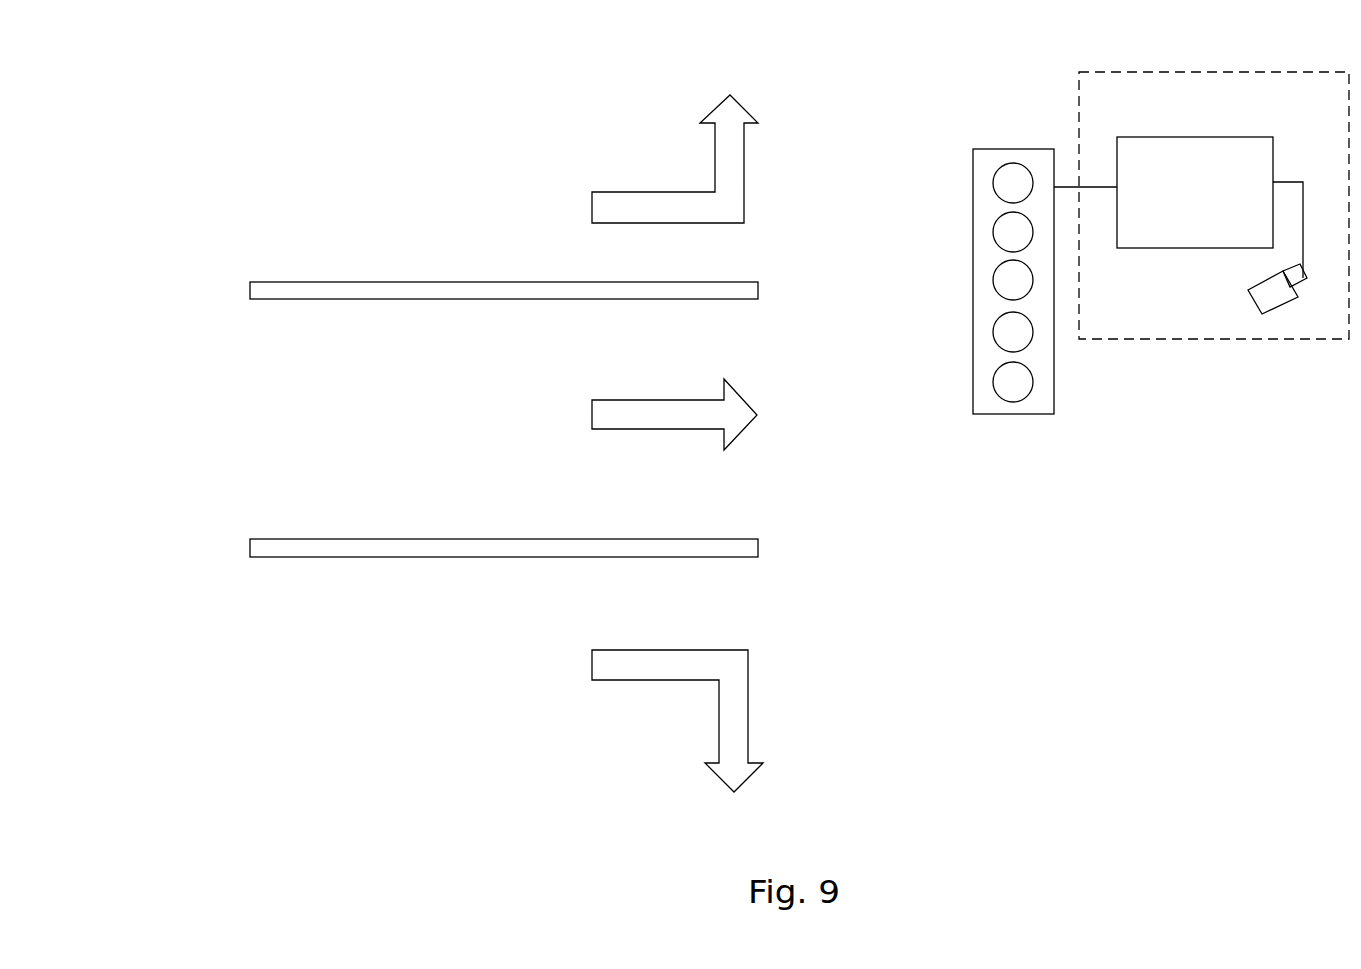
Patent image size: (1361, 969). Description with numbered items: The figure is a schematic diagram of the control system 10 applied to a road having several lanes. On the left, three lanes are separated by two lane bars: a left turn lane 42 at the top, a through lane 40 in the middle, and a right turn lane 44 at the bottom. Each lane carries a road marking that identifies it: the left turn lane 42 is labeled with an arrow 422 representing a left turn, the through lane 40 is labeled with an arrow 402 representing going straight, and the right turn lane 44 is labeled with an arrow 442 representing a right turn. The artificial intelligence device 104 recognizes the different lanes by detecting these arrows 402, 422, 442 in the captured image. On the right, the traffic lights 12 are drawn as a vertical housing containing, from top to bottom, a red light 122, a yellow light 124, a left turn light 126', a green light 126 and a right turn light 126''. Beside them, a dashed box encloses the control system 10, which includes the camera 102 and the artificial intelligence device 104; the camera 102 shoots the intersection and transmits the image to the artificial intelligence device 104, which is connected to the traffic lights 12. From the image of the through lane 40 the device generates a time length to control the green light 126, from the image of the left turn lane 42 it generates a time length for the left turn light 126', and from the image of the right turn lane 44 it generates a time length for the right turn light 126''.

The control system 10 is at (1214, 72).
The traffic lights 12 is at (1010, 148).
The through lane 40 is at (241, 432).
The left turn lane 42 is at (242, 190).
The right turn lane 44 is at (241, 673).
The camera 102 is at (1262, 285).
The artificial intelligence device 104 is at (1180, 137).
The red light 122 is at (997, 181).
The yellow light 124 is at (1000, 233).
The left turn light 126' is at (968, 282).
The green light 126 is at (970, 335).
The right turn light 126'' is at (964, 383).
The arrow representing going straight 402 is at (683, 407).
The arrow representing a left turn 422 is at (740, 158).
The arrow representing a right turn 442 is at (745, 676).